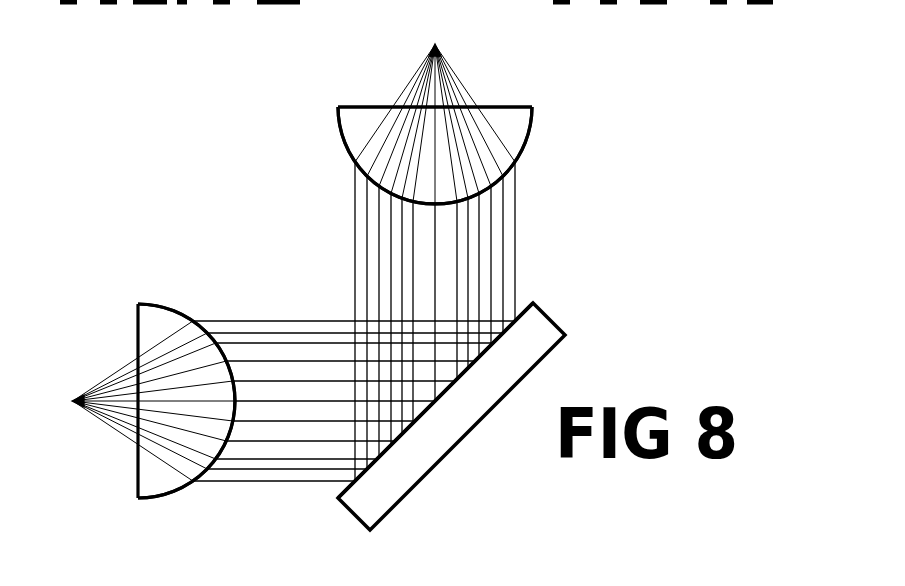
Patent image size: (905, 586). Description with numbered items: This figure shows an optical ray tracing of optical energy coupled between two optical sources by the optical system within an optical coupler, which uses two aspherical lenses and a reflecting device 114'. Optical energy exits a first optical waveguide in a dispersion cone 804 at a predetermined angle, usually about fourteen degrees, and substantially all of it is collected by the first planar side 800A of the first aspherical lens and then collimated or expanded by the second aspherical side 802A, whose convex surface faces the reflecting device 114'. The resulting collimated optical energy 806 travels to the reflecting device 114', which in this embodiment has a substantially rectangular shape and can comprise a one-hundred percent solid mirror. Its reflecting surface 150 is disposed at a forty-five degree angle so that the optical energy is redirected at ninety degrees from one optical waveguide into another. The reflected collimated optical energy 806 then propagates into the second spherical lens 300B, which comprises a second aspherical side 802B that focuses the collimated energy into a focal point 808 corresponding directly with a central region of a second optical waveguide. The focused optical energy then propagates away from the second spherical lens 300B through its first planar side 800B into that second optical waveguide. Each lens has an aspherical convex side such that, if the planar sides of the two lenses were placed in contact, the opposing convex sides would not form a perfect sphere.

The focal point 808 is at (435, 44).
The first planar side 800B is at (365, 106).
The second aspherical side 802B is at (346, 150).
The second spherical lens 300B is at (507, 90).
The collimated optical energy 806 is at (518, 237).
The reflecting surface 150 is at (522, 302).
The reflecting device 114' is at (435, 409).
The dispersion cone 804 is at (120, 368).
The first planar side 800A is at (135, 465).
The second aspherical side 802A is at (184, 486).